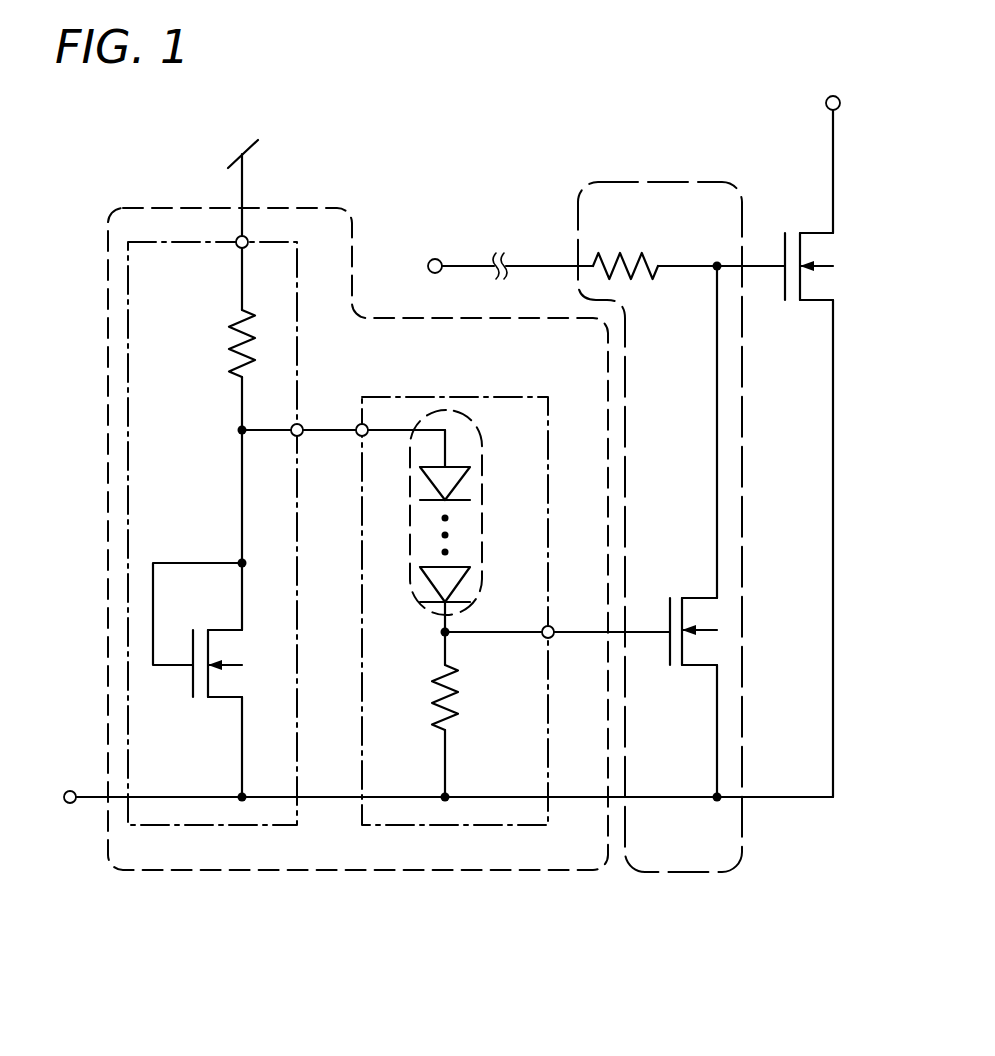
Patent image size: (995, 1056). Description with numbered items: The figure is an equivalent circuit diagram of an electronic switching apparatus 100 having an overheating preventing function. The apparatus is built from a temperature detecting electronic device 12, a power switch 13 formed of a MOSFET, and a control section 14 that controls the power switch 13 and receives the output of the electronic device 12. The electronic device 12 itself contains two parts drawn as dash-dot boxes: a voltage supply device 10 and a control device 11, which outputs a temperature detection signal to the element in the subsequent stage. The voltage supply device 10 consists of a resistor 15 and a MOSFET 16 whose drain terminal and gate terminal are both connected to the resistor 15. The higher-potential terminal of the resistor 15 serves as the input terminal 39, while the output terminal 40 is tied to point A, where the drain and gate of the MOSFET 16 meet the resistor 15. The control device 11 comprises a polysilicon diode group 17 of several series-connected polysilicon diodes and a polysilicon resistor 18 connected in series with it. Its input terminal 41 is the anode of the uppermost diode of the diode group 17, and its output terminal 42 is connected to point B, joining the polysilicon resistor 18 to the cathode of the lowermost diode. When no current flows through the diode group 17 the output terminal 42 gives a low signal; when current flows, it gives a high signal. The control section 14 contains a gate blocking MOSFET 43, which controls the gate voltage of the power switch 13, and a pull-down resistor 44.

The electronic switching apparatus 100 is at (810, 910).
The voltage supply device 10 is at (140, 240).
The control device 11 is at (418, 397).
The temperature detecting electronic device 12 is at (130, 870).
The power switch 13 is at (820, 252).
The control section 14 is at (742, 815).
The resistor 15 is at (228, 335).
The MOSFET 16 is at (193, 688).
The polysilicon diode group 17 is at (482, 525).
The polysilicon resistor 18 is at (463, 695).
The input terminal 39 is at (249, 237).
The output terminal 40 is at (297, 436).
The input terminal 41 is at (362, 436).
The output terminal 42 is at (552, 636).
The gate blocking MOSFET 43 is at (717, 613).
The pull-down resistor 44 is at (633, 252).